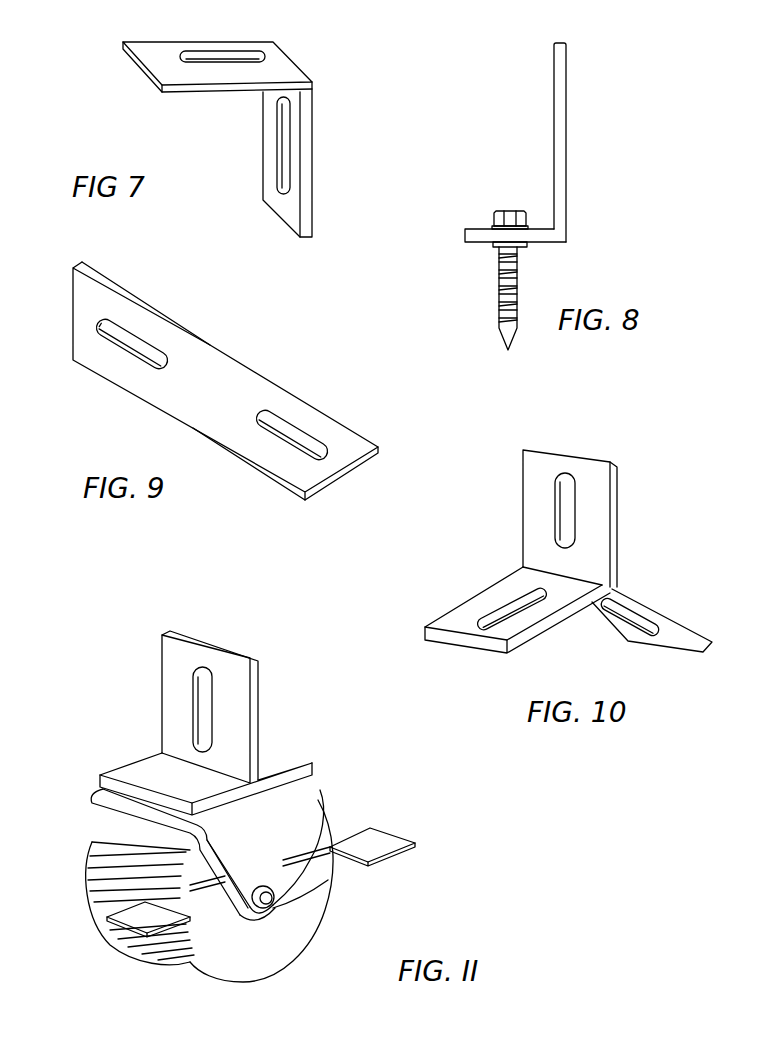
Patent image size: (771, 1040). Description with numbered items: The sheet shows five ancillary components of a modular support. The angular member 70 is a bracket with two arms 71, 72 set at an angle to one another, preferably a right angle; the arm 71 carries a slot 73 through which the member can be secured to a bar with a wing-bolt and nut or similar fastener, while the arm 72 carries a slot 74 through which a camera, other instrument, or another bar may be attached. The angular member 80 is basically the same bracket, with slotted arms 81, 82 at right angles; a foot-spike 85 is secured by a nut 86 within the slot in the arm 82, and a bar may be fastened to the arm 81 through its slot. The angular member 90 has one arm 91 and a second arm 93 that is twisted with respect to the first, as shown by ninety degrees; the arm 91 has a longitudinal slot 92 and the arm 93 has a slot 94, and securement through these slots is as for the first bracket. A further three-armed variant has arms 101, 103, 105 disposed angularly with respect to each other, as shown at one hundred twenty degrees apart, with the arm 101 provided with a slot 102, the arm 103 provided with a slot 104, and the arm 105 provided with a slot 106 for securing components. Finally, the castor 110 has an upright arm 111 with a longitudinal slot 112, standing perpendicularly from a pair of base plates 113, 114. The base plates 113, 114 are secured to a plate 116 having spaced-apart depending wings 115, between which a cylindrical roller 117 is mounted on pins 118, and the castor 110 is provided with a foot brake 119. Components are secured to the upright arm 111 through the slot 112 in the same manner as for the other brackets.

In FIG. 7, the angular member 70 is at (340, 94).
In FIG. 7, the arm 71 is at (282, 200).
In FIG. 7, the arm 72 is at (173, 65).
In FIG. 7, the slot 73 is at (287, 152).
In FIG. 7, the slot 74 is at (228, 63).
In FIG. 8, the angular member 80 is at (580, 183).
In FIG. 8, the arm 81 is at (560, 113).
In FIG. 8, the arm 82 is at (495, 235).
In FIG. 8, the foot-spike 85 is at (508, 288).
In FIG. 8, the nut 86 is at (497, 220).
In FIG. 9, the angular member 90 is at (252, 335).
In FIG. 9, the arm 91 is at (138, 322).
In FIG. 9, the longitudinal slot 92 is at (135, 348).
In FIG. 9, the arm 93 is at (298, 410).
In FIG. 9, the slot 94 is at (310, 448).
In FIG. 10, the arm 101 is at (613, 470).
In FIG. 10, the slot 102 is at (565, 507).
In FIG. 10, the arm 103 is at (650, 610).
In FIG. 10, the slot 104 is at (618, 608).
In FIG. 10, the arm 105 is at (520, 583).
In FIG. 10, the slot 106 is at (520, 605).
In FIG. 11, the castor 110 is at (282, 704).
In FIG. 11, the upright arm 111 is at (238, 690).
In FIG. 11, the longitudinal slot 112 is at (210, 680).
In FIG. 11, the base plate 113 is at (273, 757).
In FIG. 11, the base plate 114 is at (147, 763).
In FIG. 11, the depending wing 115 is at (303, 803).
In FIG. 11, the plate 116 is at (158, 808).
In FIG. 11, the cylindrical roller 117 is at (293, 935).
In FIG. 11, the pin 118 is at (268, 898).
In FIG. 11, the foot brake 119 is at (375, 840).